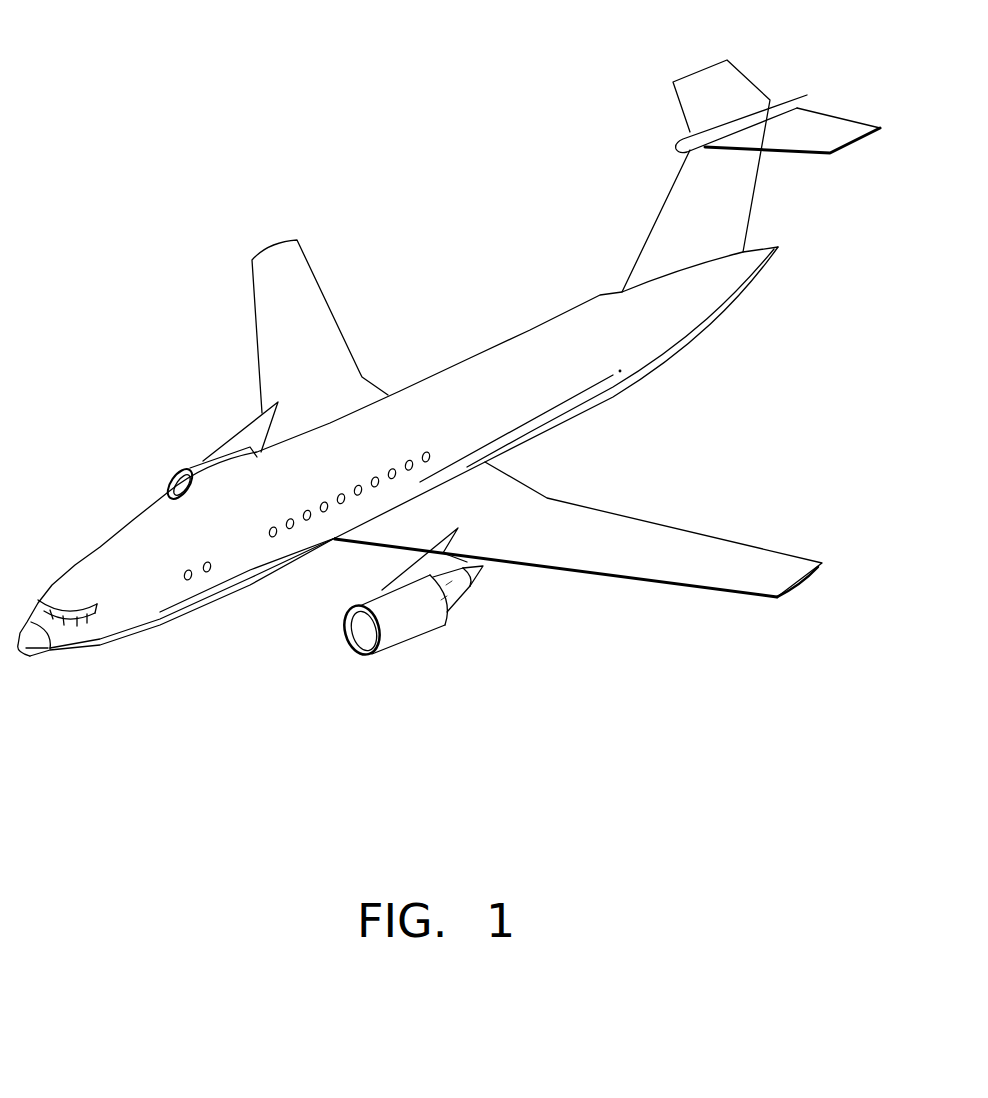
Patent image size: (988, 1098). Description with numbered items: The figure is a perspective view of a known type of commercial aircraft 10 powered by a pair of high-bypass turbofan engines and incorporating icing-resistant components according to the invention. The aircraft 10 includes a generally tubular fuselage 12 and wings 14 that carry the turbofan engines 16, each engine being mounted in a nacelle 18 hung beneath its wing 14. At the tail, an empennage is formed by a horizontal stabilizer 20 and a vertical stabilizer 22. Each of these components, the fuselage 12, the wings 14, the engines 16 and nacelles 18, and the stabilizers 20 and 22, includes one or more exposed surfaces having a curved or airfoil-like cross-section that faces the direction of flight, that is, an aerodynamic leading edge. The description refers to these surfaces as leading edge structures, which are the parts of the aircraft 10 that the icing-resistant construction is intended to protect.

The commercial aircraft 10 is at (207, 72).
The fuselage 12 is at (145, 618).
The wings 14 is at (322, 335).
The turbofan engines 16 is at (183, 450).
The nacelles 18 is at (186, 465).
The horizontal stabilizer 20 is at (735, 88).
The vertical stabilizer 22 is at (658, 230).